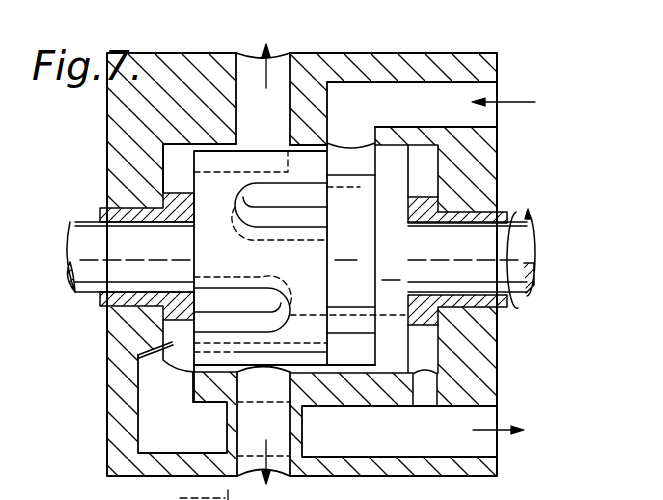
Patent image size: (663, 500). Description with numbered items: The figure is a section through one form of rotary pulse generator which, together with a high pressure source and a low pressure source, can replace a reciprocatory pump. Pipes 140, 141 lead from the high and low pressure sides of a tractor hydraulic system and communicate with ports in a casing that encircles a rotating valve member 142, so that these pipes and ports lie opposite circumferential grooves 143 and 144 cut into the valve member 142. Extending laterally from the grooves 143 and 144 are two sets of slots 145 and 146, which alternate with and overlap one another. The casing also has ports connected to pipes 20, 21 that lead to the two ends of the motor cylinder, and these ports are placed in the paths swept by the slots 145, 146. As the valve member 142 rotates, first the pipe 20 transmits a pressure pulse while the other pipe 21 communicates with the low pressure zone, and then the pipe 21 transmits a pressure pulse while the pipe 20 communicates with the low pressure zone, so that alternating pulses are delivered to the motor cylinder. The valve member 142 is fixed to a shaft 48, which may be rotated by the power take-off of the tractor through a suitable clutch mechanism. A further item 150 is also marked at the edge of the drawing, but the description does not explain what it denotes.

The pipe 20 is at (257, 425).
The pipe 21 is at (252, 87).
The shaft 48 is at (525, 290).
The pipe 140 is at (480, 113).
The pipe 141 is at (460, 445).
The rotating valve member 142 is at (250, 257).
The circumferential groove 143 is at (355, 213).
The circumferential groove 144 is at (140, 357).
The slots 145 is at (285, 213).
The slots 146 is at (218, 165).
The line 150 is at (180, 495).